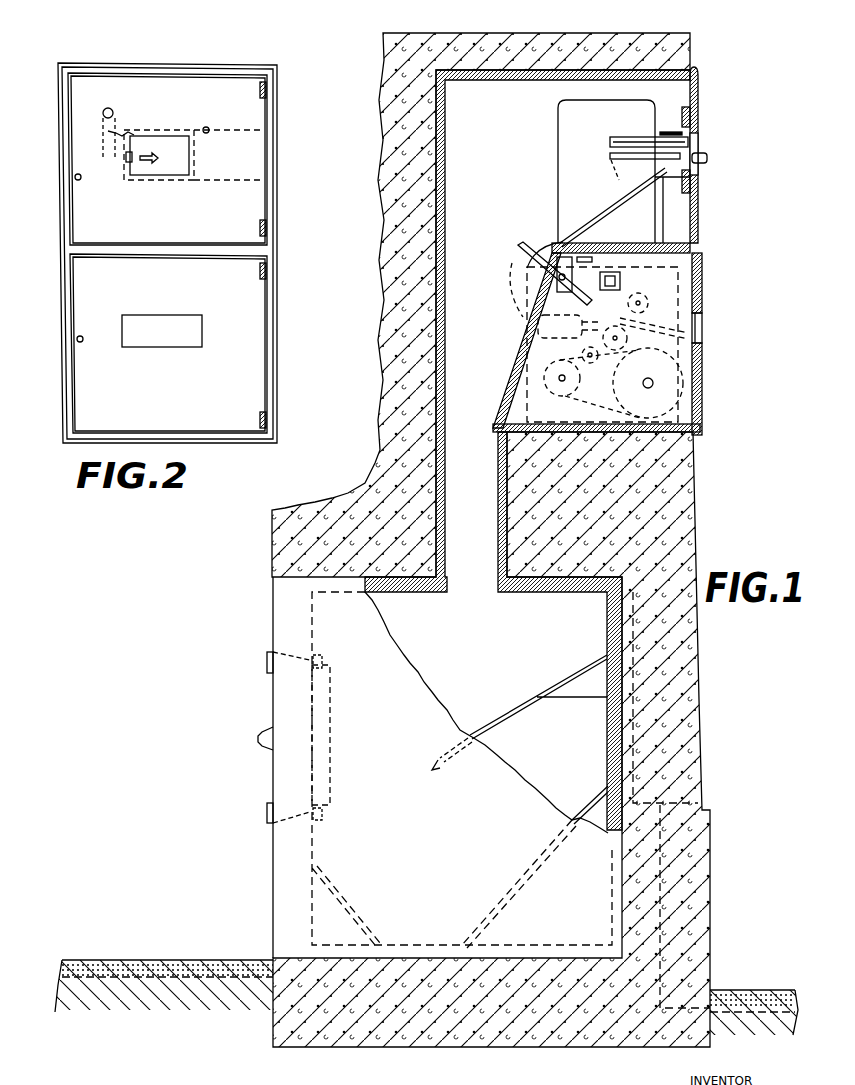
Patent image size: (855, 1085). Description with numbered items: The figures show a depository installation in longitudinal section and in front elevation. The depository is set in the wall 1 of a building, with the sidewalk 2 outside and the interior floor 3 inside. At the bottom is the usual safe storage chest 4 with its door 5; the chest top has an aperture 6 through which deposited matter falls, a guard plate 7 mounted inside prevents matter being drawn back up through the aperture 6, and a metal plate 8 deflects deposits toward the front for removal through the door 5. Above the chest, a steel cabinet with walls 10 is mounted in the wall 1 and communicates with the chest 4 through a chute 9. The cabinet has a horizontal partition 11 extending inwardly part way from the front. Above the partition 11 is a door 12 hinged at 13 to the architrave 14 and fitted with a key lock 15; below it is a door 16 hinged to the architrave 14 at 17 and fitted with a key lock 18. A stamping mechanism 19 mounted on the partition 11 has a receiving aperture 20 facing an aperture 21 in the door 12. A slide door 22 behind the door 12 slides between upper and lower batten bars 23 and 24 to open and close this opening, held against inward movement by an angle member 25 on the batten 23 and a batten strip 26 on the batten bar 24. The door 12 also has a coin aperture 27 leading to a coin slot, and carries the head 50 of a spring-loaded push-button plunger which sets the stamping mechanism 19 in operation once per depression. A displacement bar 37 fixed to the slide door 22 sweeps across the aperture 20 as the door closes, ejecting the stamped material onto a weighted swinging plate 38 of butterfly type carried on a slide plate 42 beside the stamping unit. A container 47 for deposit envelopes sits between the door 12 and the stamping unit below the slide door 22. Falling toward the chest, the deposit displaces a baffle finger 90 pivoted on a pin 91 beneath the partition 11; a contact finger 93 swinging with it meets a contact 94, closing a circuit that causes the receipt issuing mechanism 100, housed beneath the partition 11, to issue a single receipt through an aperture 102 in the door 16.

In FIG. 1, the wall 1 is at (698, 700).
In FIG. 1, the sidewalk 2 is at (737, 990).
In FIG. 1, the interior floor 3 is at (197, 960).
In FIG. 1, the safe storage chest 4 is at (382, 848).
In FIG. 1, the door 5 is at (288, 782).
In FIG. 1, the aperture 6 is at (483, 580).
In FIG. 1, the guard plate 7 is at (505, 712).
In FIG. 1, the metal plate 8 is at (587, 805).
In FIG. 1, the chute 9 is at (478, 462).
In FIG. 1, the cabinet walls 10 is at (502, 80).
In FIG. 1, the horizontal partition 11 is at (648, 253).
In FIG. 1, the door 12 is at (698, 92).
In FIG. 2, the door 12 is at (95, 218).
In FIG. 2, the hinges 13 is at (268, 232).
In FIG. 2, the architrave 14 is at (183, 65).
In FIG. 2, the key lock 15 is at (75, 177).
In FIG. 1, the door 16 is at (702, 290).
In FIG. 2, the door 16 is at (96, 391).
In FIG. 2, the hinges 17 is at (268, 415).
In FIG. 2, the key lock 18 is at (77, 339).
In FIG. 1, the stamping mechanism 19 is at (568, 135).
In FIG. 1, the receiving aperture 20 is at (610, 150).
In FIG. 1, the aperture 21 is at (698, 143).
In FIG. 1, the slide door 22 is at (707, 157).
In FIG. 2, the slide door 22 is at (176, 160).
In FIG. 1, the upper batten bar 23 is at (684, 107).
In FIG. 1, the lower batten bar 24 is at (678, 217).
In FIG. 1, the angle member 25 is at (672, 132).
In FIG. 1, the batten strip 26 is at (682, 185).
In FIG. 2, the coin aperture 27 is at (111, 109).
In FIG. 1, the displacement bar 37 is at (633, 140).
In FIG. 1, the swinging plate 38 is at (617, 172).
In FIG. 1, the slide plate 42 is at (628, 200).
In FIG. 1, the container 47 is at (682, 230).
In FIG. 2, the plunger head 50 is at (208, 128).
In FIG. 1, the baffle finger 90 is at (520, 247).
In FIG. 1, the stud or pin 91 is at (562, 280).
In FIG. 1, the electric switch contact finger 93 is at (582, 278).
In FIG. 1, the contact 94 is at (595, 267).
In FIG. 1, the receipt issuing mechanism 100 is at (665, 342).
In FIG. 1, the aperture 102 is at (702, 327).
In FIG. 2, the aperture 102 is at (170, 335).